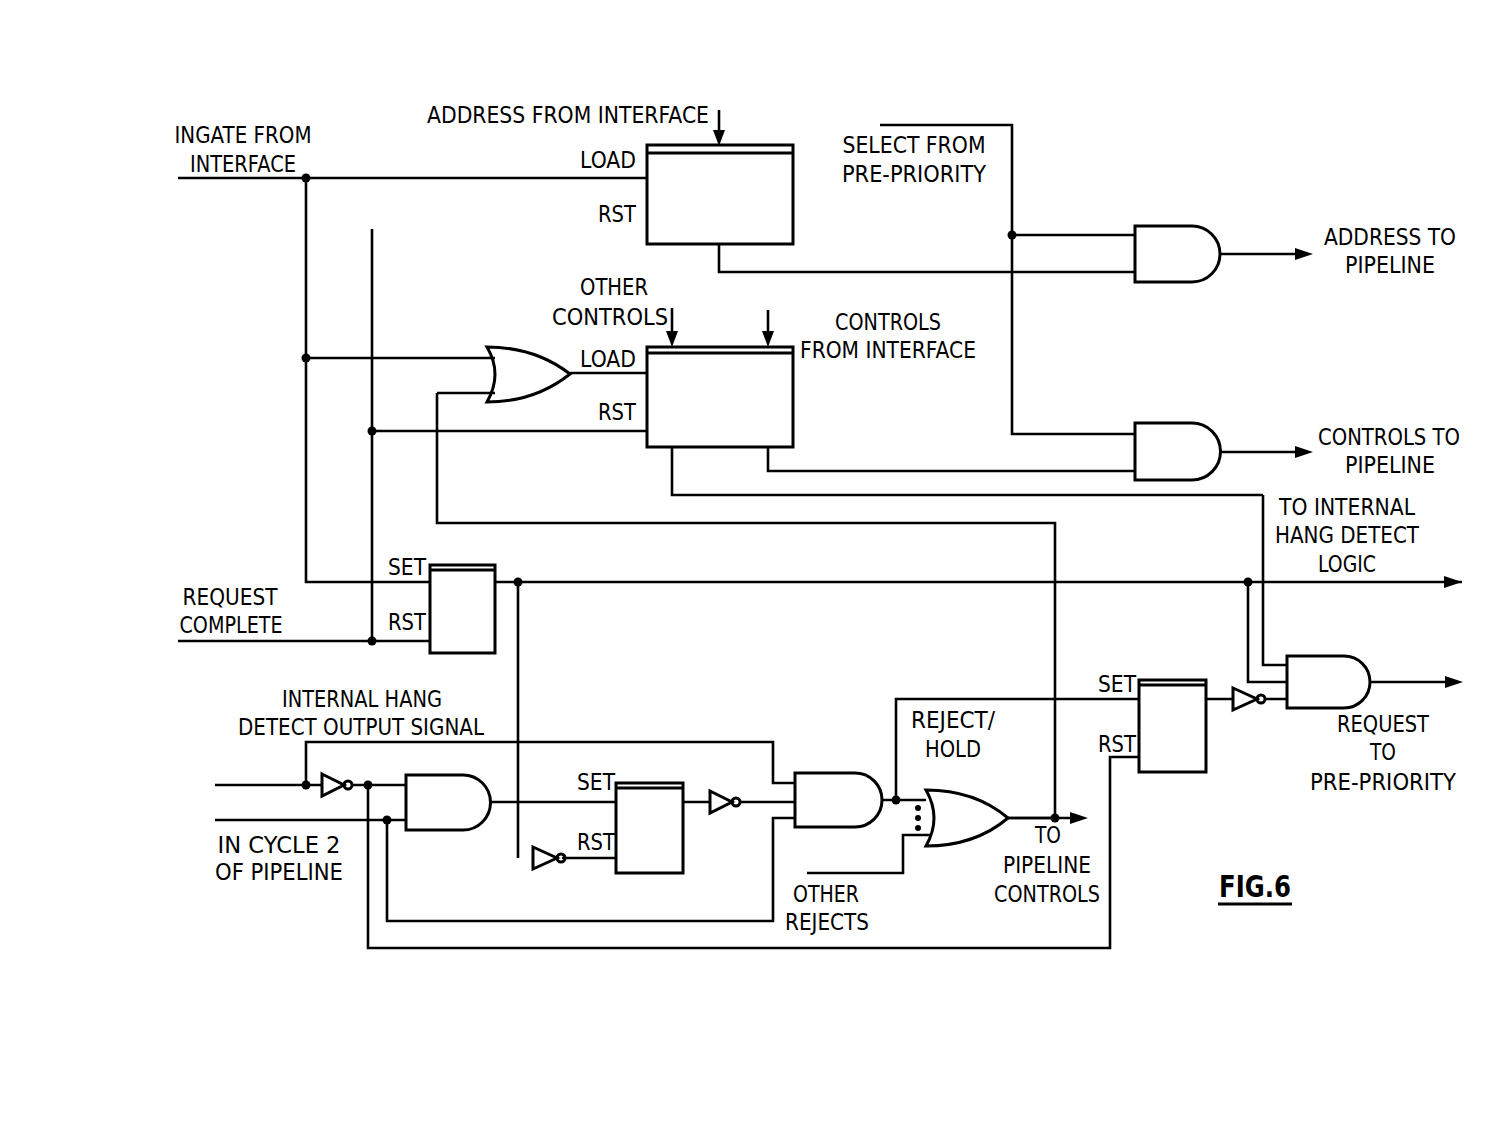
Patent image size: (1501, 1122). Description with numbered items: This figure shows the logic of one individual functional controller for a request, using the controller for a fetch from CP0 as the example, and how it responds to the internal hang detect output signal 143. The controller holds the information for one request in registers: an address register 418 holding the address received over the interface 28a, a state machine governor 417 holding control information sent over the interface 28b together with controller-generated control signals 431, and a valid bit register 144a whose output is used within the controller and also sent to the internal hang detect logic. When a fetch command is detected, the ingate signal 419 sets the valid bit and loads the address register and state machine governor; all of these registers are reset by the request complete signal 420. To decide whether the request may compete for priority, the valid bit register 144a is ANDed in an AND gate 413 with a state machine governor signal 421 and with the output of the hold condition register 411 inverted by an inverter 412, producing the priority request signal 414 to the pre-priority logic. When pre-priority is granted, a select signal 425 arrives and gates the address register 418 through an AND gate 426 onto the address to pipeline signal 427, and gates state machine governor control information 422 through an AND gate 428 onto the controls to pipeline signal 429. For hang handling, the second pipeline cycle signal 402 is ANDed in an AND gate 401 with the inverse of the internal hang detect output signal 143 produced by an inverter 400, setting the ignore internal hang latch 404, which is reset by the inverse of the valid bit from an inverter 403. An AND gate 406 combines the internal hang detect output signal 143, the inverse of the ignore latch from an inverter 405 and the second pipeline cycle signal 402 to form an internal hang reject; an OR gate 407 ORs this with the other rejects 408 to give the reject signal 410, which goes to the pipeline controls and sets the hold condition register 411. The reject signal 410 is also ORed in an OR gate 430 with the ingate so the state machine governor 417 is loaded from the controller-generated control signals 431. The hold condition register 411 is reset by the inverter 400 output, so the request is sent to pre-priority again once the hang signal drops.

The ingate signal 419 is at (197, 180).
The interface 28a is at (722, 118).
The address register 418 is at (793, 226).
The select signal 425 is at (902, 125).
The AND gate 426 is at (1182, 226).
The address to pipeline signal 427 is at (1234, 252).
The OR gate 430 is at (522, 347).
The controller-generated control signals 431 is at (675, 316).
The interface 28b is at (770, 316).
The state machine governor 417 is at (793, 429).
The AND gate 428 is at (1182, 423).
The controls to pipeline signal 429 is at (1234, 450).
The state machine governor signal 421 is at (672, 482).
The state machine governor control information 422 is at (826, 471).
The valid bit register 144a is at (446, 565).
The request complete signal 420 is at (200, 643).
The internal hang detect output signal 143 is at (290, 783).
The inverter 400 is at (336, 777).
The AND gate 401 is at (432, 775).
The second pipeline cycle signal 402 is at (285, 818).
The inverter 403 is at (546, 870).
The ignore internal hang latch 404 is at (640, 783).
The inverter 405 is at (720, 790).
The AND gate 406 is at (812, 773).
The OR gate 407 is at (962, 790).
The other rejects 408 is at (866, 873).
The reject signal 410 is at (1036, 815).
The hold condition register 411 is at (1160, 680).
The inverter 412 is at (1240, 710).
The AND gate 413 is at (1332, 656).
The priority request signal 414 is at (1382, 680).